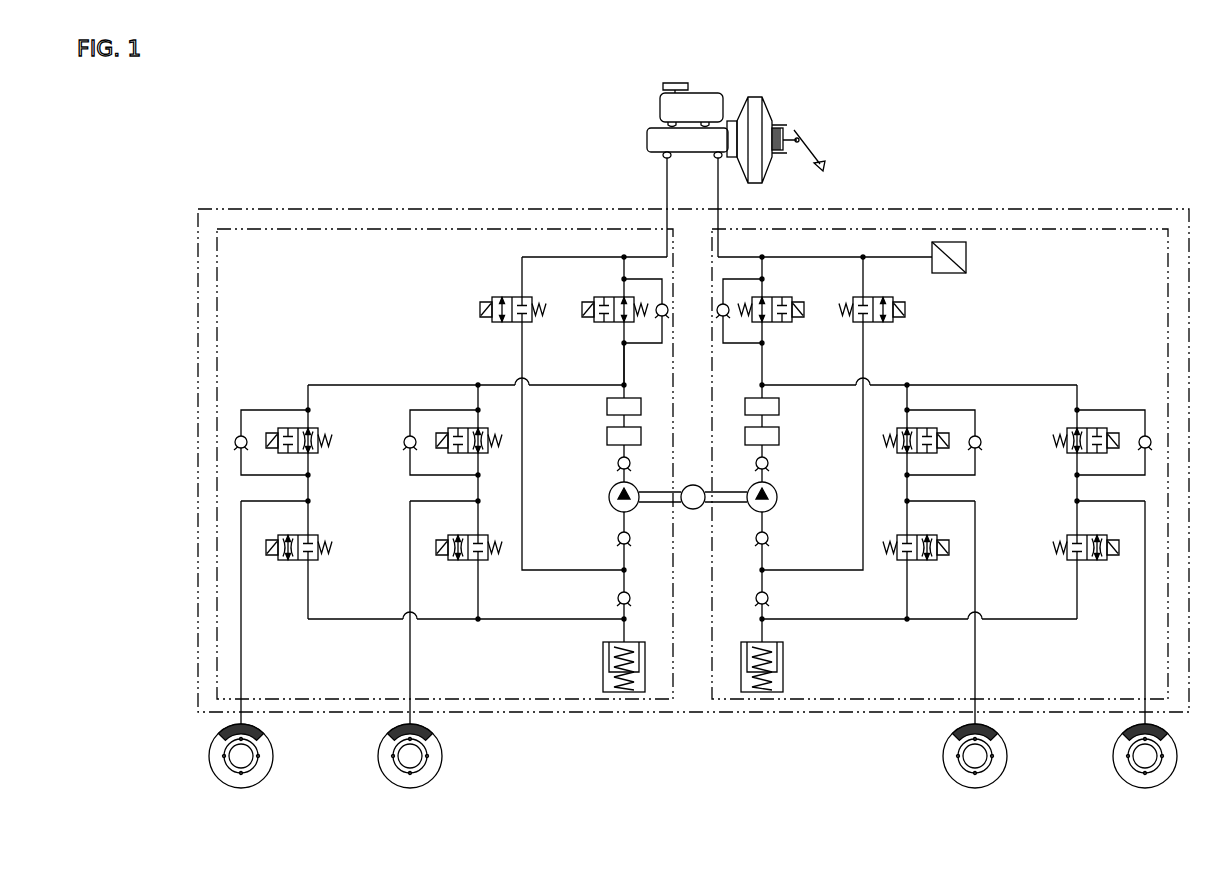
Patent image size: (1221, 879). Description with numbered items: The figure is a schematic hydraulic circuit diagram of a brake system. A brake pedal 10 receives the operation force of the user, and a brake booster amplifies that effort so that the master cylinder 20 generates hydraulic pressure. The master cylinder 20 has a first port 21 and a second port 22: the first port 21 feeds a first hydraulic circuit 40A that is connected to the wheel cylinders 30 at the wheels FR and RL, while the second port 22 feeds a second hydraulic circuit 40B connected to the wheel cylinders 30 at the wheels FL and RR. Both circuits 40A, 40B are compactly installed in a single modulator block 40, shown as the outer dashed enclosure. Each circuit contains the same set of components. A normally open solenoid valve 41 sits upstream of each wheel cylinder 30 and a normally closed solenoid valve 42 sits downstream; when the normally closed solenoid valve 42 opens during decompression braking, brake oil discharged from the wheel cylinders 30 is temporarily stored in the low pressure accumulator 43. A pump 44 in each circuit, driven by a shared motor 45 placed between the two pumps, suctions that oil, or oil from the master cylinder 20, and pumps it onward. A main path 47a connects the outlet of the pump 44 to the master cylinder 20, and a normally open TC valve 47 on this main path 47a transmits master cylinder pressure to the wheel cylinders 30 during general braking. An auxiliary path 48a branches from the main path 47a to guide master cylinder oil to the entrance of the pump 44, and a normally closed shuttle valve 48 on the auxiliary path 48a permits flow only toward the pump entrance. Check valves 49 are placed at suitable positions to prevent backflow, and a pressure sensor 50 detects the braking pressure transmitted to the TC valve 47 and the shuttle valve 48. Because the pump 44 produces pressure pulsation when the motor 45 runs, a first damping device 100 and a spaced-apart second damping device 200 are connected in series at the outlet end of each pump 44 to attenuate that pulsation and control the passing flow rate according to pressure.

The brake pedal 10 is at (812, 152).
The master cylinder 20 is at (647, 141).
The first port 21 is at (718, 160).
The second port 22 is at (667, 160).
The wheel cylinders 30 is at (215, 745).
The modulator block 40 is at (510, 209).
The first hydraulic circuit 40A is at (1010, 229).
The second hydraulic circuit 40B is at (445, 229).
The normally open solenoid valve 41 is at (297, 453).
The normally closed solenoid valve 42 is at (297, 560).
The low pressure accumulator 43 is at (603, 657).
The pump 44 is at (609, 497).
The motor 45 is at (693, 509).
The TC valve 47 is at (602, 297).
The main path 47a is at (863, 353).
The shuttle valve 48 is at (498, 297).
The auxiliary path 48a is at (522, 353).
The check valve 49 is at (630, 596).
The pressure sensor 50 is at (966, 258).
The first damping device 100 is at (603, 439).
The second damping device 200 is at (603, 409).